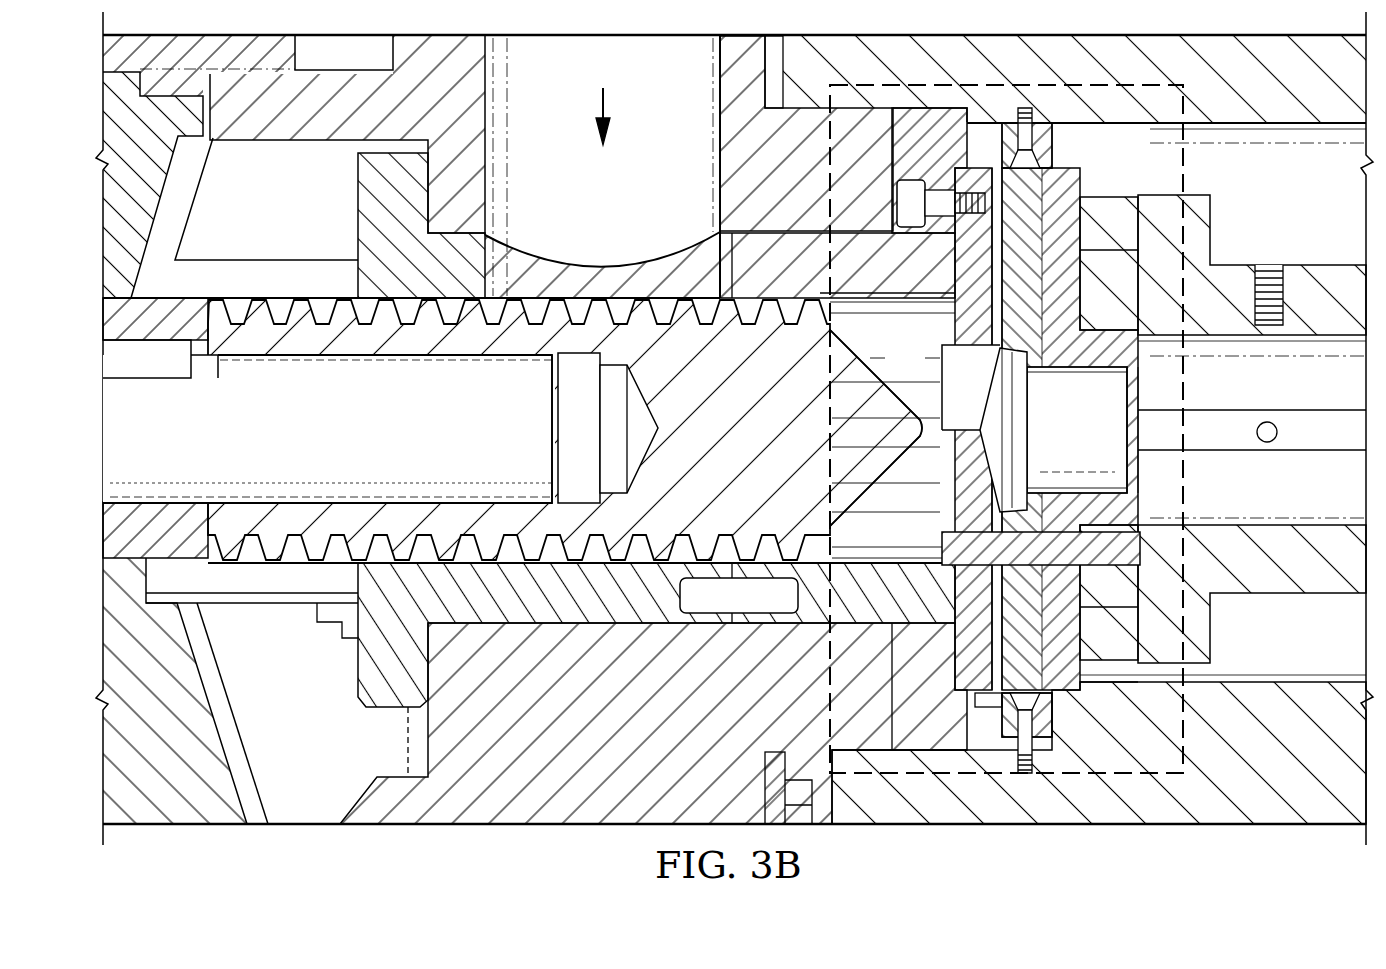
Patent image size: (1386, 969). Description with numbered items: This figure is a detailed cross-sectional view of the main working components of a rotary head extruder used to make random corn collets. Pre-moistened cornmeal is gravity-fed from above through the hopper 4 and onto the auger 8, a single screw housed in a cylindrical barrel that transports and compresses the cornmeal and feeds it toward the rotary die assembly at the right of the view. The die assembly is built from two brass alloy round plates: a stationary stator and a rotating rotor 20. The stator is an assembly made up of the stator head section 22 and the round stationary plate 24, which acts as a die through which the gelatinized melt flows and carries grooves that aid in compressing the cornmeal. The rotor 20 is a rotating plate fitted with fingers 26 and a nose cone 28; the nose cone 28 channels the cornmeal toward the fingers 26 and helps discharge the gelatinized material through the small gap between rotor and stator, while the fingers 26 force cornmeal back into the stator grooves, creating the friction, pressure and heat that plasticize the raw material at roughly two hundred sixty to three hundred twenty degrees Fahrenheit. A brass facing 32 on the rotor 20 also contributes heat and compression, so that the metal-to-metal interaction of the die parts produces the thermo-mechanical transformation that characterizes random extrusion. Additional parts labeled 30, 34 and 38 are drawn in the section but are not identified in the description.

The hopper 4 is at (562, 110).
The auger 8 is at (552, 296).
The rotor 20 is at (1023, 198).
The stator head section 22 is at (947, 737).
The stationary plate 24 is at (967, 590).
The fingers 26 is at (940, 543).
The nose cone 28 is at (990, 420).
The fastener 30 is at (1053, 727).
The brass facing 32 is at (1002, 272).
The screw tip 34 is at (866, 380).
The nut housing 38 is at (520, 624).